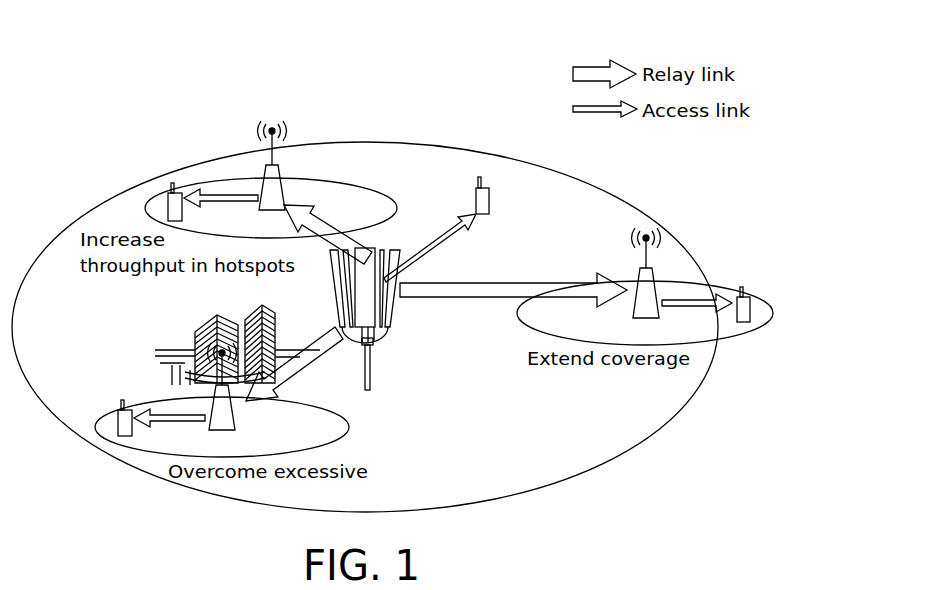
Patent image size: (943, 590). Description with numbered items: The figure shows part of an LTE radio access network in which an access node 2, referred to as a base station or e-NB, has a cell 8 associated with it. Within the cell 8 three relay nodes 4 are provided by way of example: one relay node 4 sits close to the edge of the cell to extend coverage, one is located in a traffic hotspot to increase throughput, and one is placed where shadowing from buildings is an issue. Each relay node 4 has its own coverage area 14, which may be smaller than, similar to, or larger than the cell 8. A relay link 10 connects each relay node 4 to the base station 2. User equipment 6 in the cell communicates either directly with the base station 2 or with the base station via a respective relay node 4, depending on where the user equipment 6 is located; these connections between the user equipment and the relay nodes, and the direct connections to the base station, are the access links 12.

The access node 2 is at (397, 319).
The relay node 4 is at (296, 182).
The user equipment 6 is at (165, 195).
The cell 8 is at (596, 469).
The relay link 10 is at (592, 66).
The access link 12 is at (590, 113).
The coverage area 14 is at (386, 193).